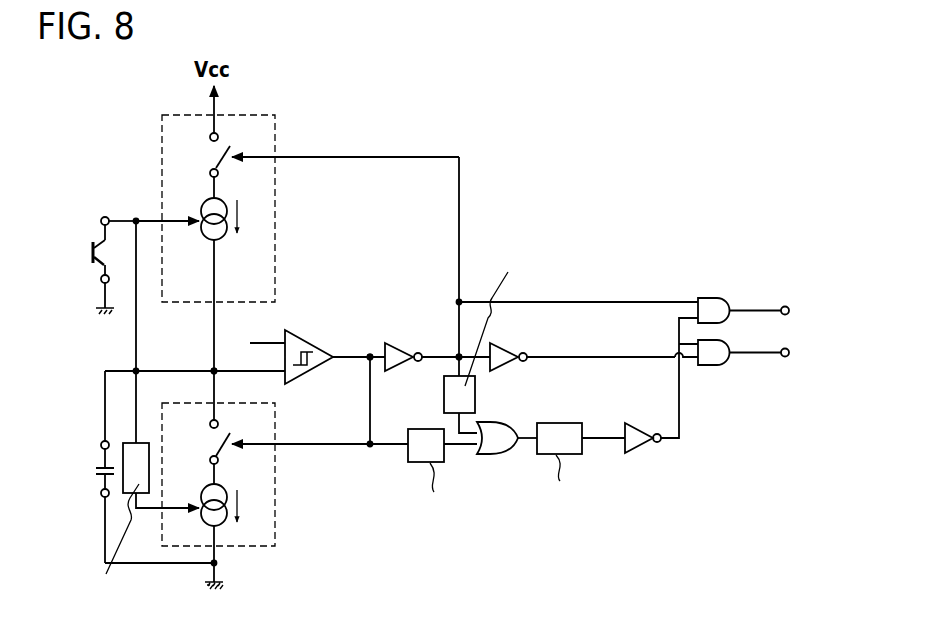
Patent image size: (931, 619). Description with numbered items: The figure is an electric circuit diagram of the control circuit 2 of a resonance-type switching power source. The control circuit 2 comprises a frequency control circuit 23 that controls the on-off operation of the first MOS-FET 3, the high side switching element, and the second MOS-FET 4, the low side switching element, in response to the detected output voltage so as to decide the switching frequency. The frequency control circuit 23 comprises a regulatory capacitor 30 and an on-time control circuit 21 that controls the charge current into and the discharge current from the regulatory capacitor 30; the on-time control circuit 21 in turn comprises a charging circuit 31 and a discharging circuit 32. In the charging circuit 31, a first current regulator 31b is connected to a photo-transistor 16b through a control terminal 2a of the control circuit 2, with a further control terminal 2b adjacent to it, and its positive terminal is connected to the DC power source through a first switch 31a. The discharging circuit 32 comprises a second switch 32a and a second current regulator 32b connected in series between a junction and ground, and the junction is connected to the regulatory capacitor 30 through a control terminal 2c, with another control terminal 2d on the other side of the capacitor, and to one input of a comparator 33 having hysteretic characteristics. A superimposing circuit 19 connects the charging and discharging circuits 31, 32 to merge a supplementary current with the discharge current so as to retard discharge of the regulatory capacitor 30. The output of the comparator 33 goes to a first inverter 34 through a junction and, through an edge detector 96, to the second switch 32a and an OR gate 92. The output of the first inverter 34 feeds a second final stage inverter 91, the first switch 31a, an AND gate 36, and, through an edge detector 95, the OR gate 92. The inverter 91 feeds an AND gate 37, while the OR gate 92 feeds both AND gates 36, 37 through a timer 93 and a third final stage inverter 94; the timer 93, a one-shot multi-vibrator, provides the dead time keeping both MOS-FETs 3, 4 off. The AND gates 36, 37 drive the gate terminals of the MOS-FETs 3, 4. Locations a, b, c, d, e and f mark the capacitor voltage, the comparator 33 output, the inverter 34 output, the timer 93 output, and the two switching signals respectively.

The control circuit 2 is at (632, 106).
The control terminal 2a is at (103, 218).
The control terminal 2b is at (102, 282).
The control terminal 2c is at (101, 444).
The control terminal 2d is at (102, 496).
The first MOS-FET 3 is at (795, 311).
The second MOS-FET 4 is at (795, 353).
The photo-transistor 16b is at (92, 245).
The superimposing circuit 19 is at (148, 465).
The on-time control circuit 21 is at (150, 211).
The frequency control circuit 23 is at (420, 139).
The regulatory capacitor 30 is at (100, 472).
The charging circuit 31 is at (160, 116).
The first switch 31a is at (228, 159).
The first current regulator 31b is at (244, 198).
The discharging circuit 32 is at (200, 404).
The second switch 32a is at (244, 434).
The second current regulator 32b is at (232, 498).
The comparator 33 is at (310, 331).
The first inverter 34 is at (398, 341).
The first AND gate 36 is at (710, 300).
The second AND gate 37 is at (714, 361).
The second final stage inverter 91 is at (508, 351).
The OR gate 92 is at (500, 421).
The timer 93 is at (562, 424).
The third final stage inverter 94 is at (634, 426).
The edge detector 95 is at (444, 394).
The edge detector 96 is at (408, 456).
The location a is at (212, 370).
The location b is at (370, 355).
The location c is at (456, 356).
The location d is at (612, 436).
The location e is at (760, 309).
The location f is at (756, 354).